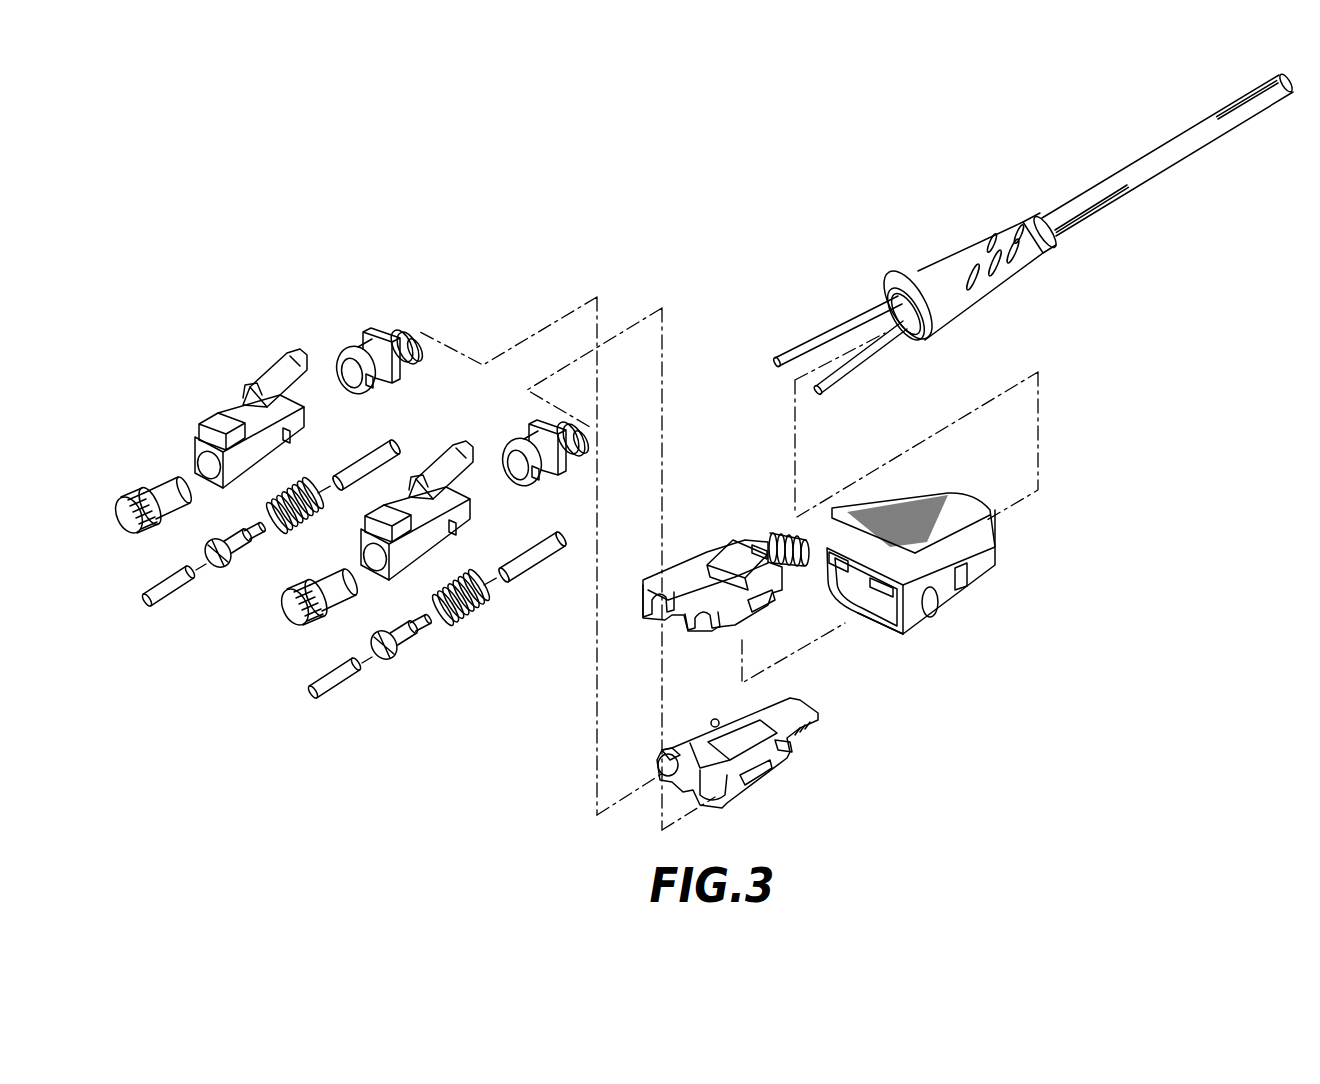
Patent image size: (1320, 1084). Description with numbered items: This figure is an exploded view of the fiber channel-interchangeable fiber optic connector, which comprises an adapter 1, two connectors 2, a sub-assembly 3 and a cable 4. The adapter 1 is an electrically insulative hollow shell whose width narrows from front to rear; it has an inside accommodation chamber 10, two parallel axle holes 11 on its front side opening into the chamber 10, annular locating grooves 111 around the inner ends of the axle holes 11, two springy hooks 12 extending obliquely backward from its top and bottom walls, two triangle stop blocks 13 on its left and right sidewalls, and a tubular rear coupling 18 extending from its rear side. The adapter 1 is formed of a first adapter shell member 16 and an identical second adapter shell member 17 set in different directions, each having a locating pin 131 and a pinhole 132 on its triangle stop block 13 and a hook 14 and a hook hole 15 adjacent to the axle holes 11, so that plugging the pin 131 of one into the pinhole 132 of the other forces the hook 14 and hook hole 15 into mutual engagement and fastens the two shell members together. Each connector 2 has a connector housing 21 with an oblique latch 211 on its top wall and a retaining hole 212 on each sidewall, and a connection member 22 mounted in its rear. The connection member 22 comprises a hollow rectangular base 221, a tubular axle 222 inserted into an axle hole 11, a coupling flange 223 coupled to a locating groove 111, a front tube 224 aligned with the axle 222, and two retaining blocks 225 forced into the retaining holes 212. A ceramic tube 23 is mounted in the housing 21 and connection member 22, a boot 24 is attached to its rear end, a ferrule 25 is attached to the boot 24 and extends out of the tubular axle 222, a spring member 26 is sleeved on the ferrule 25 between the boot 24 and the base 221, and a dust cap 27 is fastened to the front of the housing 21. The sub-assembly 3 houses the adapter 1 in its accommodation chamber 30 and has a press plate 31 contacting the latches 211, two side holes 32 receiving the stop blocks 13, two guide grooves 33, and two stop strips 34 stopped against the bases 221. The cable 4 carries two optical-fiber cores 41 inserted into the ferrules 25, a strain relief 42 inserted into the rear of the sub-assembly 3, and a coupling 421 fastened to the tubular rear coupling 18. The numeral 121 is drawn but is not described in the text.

The adapter 1 is at (725, 496).
The connector 2 is at (245, 306).
The sub-assembly 3 is at (1016, 621).
The cable 4 is at (1178, 150).
The inside accommodation chamber 10 is at (742, 770).
The axle hole 11 is at (668, 772).
The springy hook 12 is at (730, 557).
The triangle stop block 13 is at (775, 590).
The hook 14 is at (645, 603).
The hook hole 15 is at (700, 622).
The first adapter shell member 16 is at (672, 580).
The second adapter shell member 17 is at (755, 785).
The tubular rear coupling 18 is at (792, 538).
The connector housing 21 is at (244, 466).
The connection member 22 is at (357, 306).
The ceramic tube 23 is at (332, 679).
The boot 24 is at (402, 633).
The ferrule 25 is at (556, 547).
The spring member 26 is at (470, 606).
The dust cap 27 is at (160, 492).
The accommodation chamber 30 is at (859, 600).
The press plate 31 is at (906, 510).
The side hole 32 is at (970, 578).
The guide groove 33 is at (905, 634).
The stop strip 34 is at (937, 617).
The optical-fiber core 41 is at (875, 357).
The strain relief 42 is at (993, 283).
The annular locating groove 111 is at (667, 750).
The tab rear 121 is at (768, 550).
The locating pin 131 is at (713, 719).
The pinhole 132 is at (778, 757).
The latch 211 is at (277, 370).
The retaining hole 212 is at (292, 438).
The hollow rectangular base 221 is at (565, 459).
The tubular axle 222 is at (400, 329).
The coupling flange 223 is at (583, 433).
The front tube 224 is at (358, 358).
The retaining block 225 is at (376, 388).
The coupling 421 is at (921, 285).